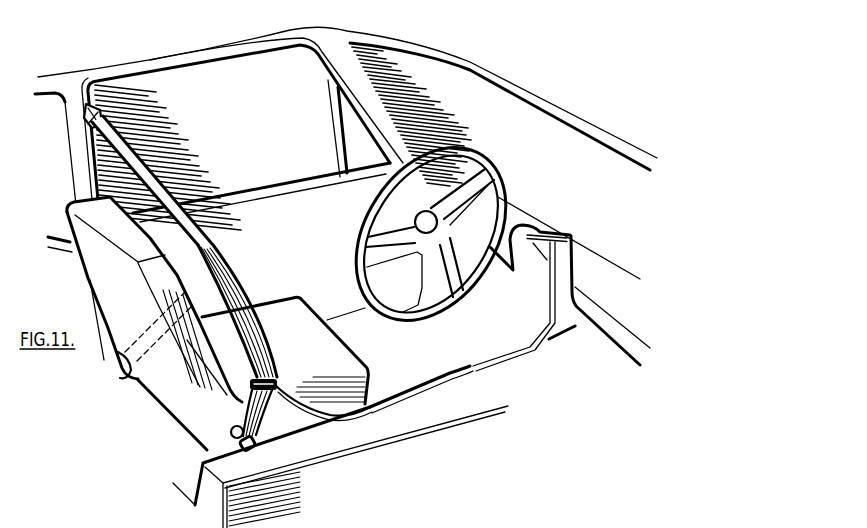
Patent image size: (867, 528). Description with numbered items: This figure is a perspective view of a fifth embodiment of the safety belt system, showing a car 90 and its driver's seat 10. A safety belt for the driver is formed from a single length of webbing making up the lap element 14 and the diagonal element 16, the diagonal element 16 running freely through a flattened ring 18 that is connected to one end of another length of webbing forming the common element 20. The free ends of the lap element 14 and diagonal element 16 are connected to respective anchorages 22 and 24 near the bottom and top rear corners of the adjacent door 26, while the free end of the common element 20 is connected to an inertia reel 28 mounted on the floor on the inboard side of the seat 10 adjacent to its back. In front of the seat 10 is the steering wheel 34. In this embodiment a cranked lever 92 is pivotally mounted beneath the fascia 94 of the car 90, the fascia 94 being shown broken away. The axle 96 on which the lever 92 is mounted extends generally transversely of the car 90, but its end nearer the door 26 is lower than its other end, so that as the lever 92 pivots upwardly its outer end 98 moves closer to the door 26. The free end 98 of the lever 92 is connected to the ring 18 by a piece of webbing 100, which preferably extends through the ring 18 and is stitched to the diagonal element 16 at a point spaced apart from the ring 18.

The driver's seat 10 is at (153, 370).
The lap element 14 is at (215, 298).
The diagonal element 16 is at (170, 192).
The flattened ring 18 is at (277, 377).
The common element 20 is at (268, 418).
The anchorage 22 is at (118, 368).
The anchorage 24 is at (86, 121).
The door 26 is at (253, 145).
The inertia reel 28 is at (241, 447).
The steering wheel 34 is at (490, 166).
The car 90 is at (526, 80).
The cranked lever 92 is at (551, 346).
The fascia 94 is at (500, 252).
The axle 96 is at (541, 234).
The outer end of lever 98 is at (475, 363).
The piece of webbing 100 is at (393, 400).